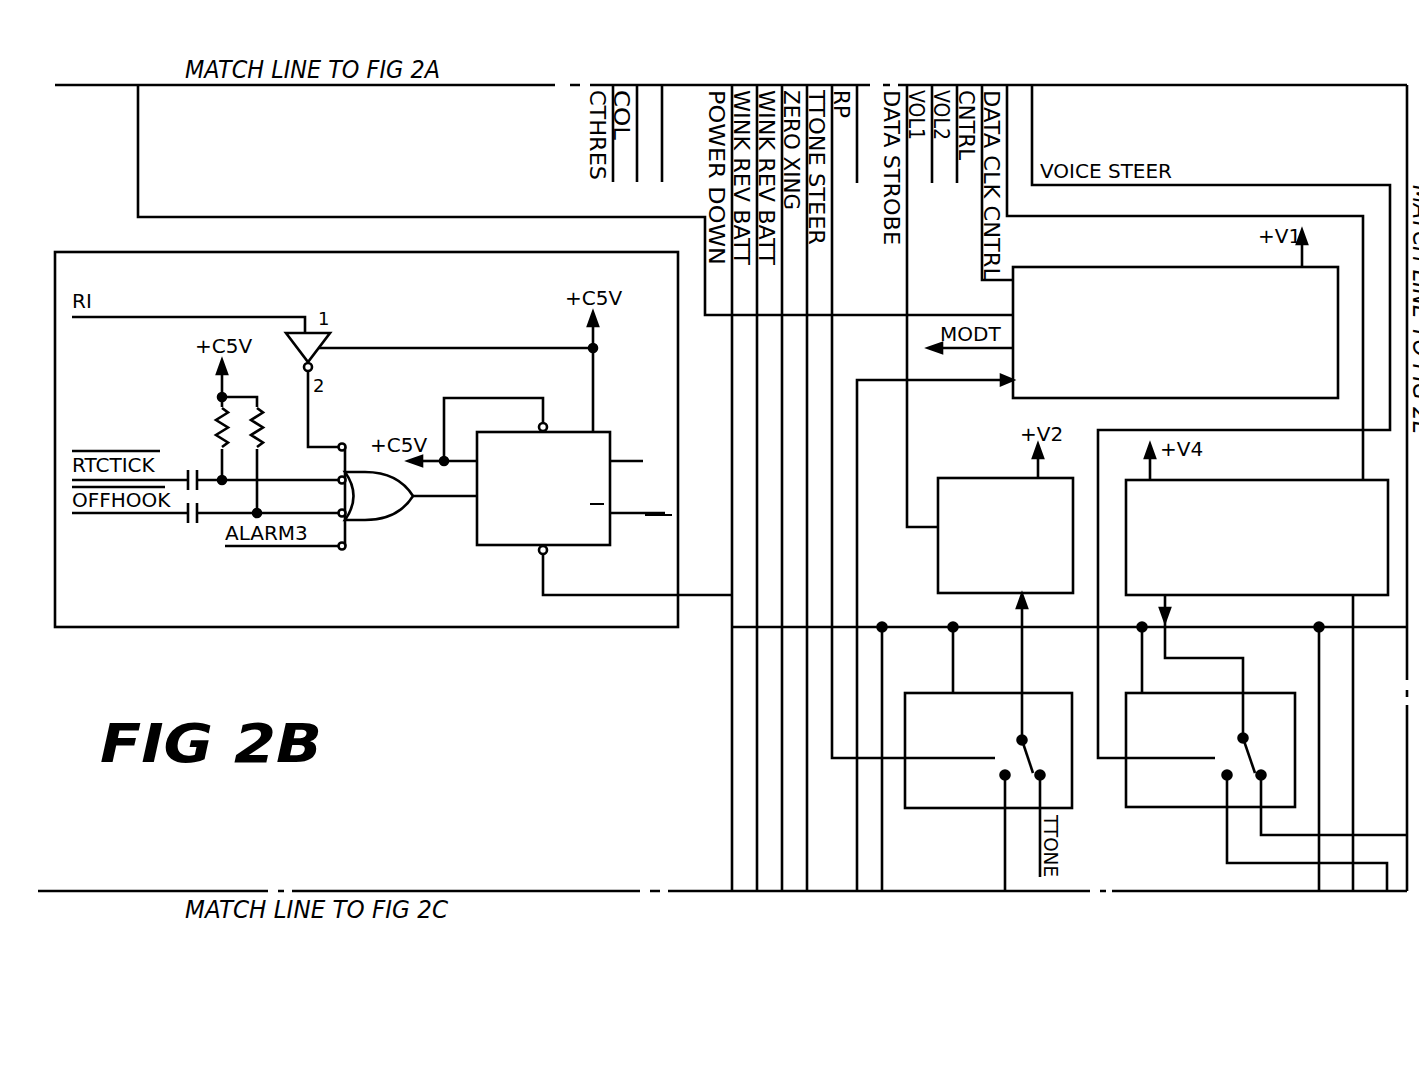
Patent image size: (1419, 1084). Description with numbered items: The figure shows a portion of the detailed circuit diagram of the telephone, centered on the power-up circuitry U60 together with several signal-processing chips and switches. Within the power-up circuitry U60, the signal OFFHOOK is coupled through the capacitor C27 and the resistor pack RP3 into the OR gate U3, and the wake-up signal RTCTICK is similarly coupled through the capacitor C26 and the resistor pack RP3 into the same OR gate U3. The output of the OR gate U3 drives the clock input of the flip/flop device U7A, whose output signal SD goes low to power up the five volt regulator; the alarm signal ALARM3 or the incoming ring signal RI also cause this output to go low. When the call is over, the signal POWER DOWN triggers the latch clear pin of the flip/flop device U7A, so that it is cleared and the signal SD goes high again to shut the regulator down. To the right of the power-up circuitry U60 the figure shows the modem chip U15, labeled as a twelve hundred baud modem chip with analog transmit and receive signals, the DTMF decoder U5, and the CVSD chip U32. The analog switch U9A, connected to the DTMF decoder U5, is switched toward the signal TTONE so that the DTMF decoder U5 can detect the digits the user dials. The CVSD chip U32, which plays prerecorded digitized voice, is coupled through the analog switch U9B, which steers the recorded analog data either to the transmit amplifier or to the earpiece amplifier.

The power-up circuitry U60 is at (366, 453).
The OR gate U3 is at (373, 496).
The flip/flop device U7A is at (570, 496).
The resistor pack RP3 is at (236, 422).
The capacitor C26 is at (197, 466).
The capacitor C27 is at (194, 526).
The 1200 baud modem chip U15 is at (1184, 345).
The DTMF decoder U5 is at (1013, 549).
The CVSD chip U32 is at (1264, 550).
The analog switch U9A is at (1007, 764).
The analog switch U9B is at (1218, 764).